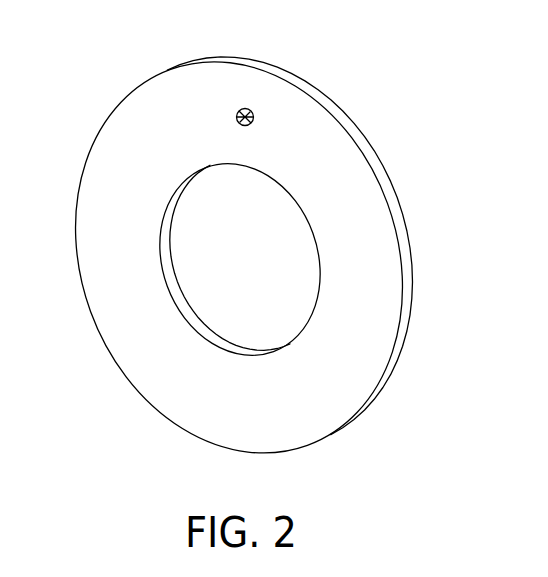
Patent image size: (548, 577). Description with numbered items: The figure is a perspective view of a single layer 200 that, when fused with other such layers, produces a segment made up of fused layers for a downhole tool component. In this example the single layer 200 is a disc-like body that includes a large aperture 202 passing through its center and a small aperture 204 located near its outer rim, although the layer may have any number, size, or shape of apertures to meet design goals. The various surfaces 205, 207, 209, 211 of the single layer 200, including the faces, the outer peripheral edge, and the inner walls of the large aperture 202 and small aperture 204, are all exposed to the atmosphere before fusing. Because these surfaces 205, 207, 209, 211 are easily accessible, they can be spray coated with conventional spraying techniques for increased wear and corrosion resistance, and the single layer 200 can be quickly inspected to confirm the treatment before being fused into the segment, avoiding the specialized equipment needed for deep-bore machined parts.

The single layer 200 is at (251, 257).
The large aperture 202 is at (212, 278).
The small aperture 204 is at (238, 110).
The surface 205 is at (383, 335).
The surface 207 is at (228, 349).
The surface 209 is at (374, 160).
The surface 211 is at (236, 118).